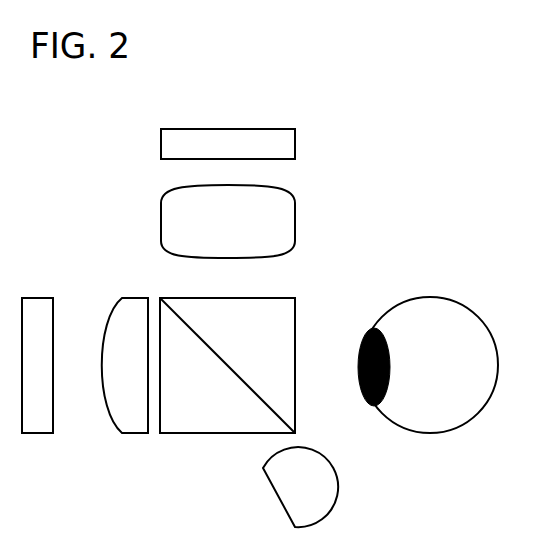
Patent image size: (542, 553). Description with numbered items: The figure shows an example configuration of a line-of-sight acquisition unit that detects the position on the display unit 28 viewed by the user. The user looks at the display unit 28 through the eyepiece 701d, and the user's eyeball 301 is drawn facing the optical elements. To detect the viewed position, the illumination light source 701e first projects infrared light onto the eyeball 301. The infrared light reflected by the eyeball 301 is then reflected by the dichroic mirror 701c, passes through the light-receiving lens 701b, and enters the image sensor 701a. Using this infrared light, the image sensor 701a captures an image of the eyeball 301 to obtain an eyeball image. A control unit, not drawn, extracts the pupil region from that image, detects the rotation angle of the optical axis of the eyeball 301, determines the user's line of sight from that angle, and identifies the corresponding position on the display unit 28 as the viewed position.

The display unit 28 is at (35, 298).
The image sensor 701a is at (268, 129).
The light-receiving lens 701b is at (273, 190).
The dichroic mirror 701c is at (277, 298).
The eyepiece 701d is at (123, 433).
The illumination light source 701e is at (317, 500).
The eyeball 301 is at (440, 295).